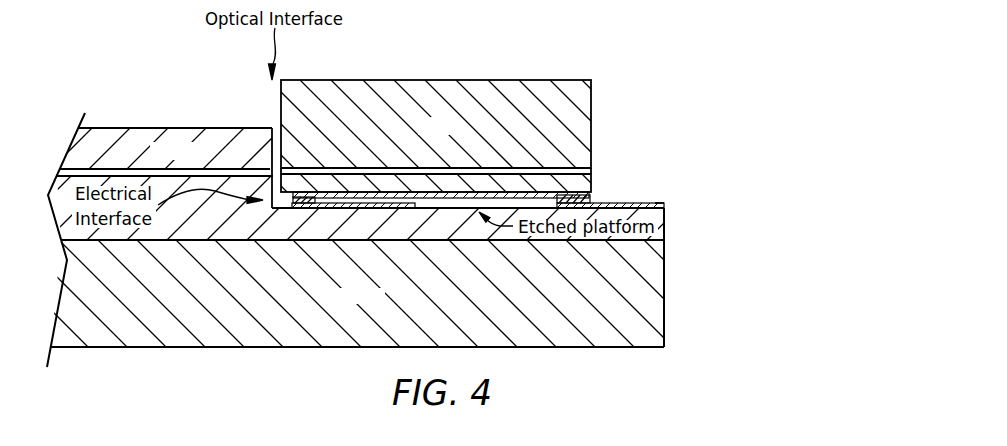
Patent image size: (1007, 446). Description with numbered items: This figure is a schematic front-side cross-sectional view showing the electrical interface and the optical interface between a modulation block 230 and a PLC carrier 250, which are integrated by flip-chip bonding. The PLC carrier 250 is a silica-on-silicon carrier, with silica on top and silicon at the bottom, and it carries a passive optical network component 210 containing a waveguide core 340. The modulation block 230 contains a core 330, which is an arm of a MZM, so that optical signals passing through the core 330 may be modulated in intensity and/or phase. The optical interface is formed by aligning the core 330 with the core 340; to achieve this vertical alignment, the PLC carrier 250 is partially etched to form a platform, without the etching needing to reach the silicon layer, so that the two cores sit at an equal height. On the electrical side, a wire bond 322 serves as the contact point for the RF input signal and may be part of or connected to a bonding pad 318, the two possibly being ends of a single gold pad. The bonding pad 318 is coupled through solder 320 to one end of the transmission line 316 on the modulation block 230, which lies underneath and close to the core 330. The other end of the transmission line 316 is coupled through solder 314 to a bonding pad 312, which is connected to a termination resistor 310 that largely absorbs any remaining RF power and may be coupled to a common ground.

The passive optical network component 210 is at (103, 128).
The core 340 is at (260, 168).
The modulation block 230 is at (558, 80).
The core 330 is at (565, 168).
The solder 320 is at (578, 185).
The bonding pad 318 is at (630, 190).
The wire bond 322 is at (662, 203).
The solder 314 is at (299, 208).
The bonding pad 312 is at (309, 220).
The termination resistor 310 is at (362, 222).
The transmission line 316 is at (448, 218).
The PLC carrier 250 is at (620, 347).